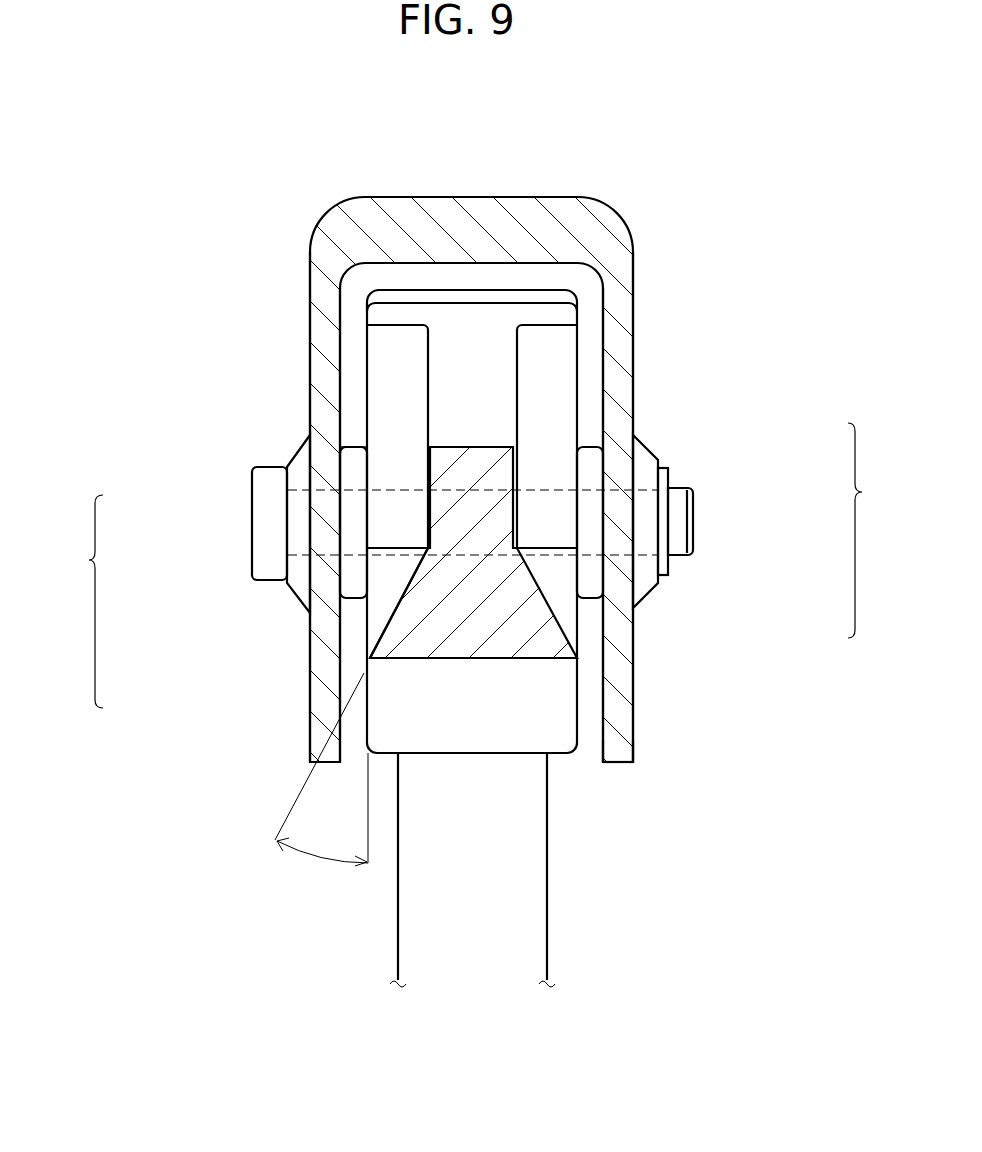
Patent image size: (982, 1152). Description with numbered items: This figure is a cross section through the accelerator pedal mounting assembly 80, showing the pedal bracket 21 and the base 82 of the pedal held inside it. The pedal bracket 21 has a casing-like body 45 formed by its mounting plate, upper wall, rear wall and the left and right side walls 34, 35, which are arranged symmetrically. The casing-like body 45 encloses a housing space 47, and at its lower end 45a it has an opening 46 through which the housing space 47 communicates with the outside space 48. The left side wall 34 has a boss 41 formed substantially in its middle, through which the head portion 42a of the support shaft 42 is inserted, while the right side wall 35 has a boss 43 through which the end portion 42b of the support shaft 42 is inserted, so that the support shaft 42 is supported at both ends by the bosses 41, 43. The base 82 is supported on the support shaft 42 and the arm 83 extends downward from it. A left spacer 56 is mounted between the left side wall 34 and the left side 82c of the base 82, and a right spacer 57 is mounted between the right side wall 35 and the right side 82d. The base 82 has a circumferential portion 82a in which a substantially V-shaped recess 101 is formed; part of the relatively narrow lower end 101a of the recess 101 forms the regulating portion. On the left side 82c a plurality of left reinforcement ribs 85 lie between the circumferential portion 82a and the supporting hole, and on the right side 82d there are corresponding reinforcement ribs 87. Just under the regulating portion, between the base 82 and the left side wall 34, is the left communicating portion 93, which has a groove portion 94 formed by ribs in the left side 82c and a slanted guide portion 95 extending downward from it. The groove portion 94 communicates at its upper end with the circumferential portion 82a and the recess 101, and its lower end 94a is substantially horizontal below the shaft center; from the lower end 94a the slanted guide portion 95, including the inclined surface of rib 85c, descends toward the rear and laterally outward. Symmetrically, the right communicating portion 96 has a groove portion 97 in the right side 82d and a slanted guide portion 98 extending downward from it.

The mounting structure 80 is at (491, 441).
The pedal bracket 21 is at (491, 454).
The casing-like body 45 is at (557, 197).
The housing space 47 is at (405, 275).
The left side wall 34 is at (308, 318).
The right side wall 35 is at (630, 388).
The opening 46 is at (600, 742).
The lower end 45a is at (636, 742).
The base 82 is at (385, 445).
The circumferential portion 82a is at (457, 297).
The left side 82c is at (427, 410).
The right side 82d is at (530, 393).
The lower end of groove portion 94a is at (398, 547).
The left reinforcement rib 85c is at (375, 622).
The substantially V-shaped recess 101 is at (472, 493).
The lower end of V-shaped recess 101a is at (490, 442).
The left spacer 56 is at (350, 480).
The right spacer 57 is at (595, 474).
The support shaft 42 is at (470, 523).
The head portion 42a is at (269, 523).
The end portion 42b is at (680, 508).
The boss 41 is at (297, 587).
The boss 43 is at (650, 538).
The arm 83 is at (548, 865).
The left reinforcement ribs 85 is at (368, 397).
The reinforcement ribs 87 is at (580, 368).
The groove portion 97 is at (550, 440).
The slanted guide portion 98 is at (560, 583).
The groove portion 94 is at (395, 458).
The slanted guide portion 95 is at (390, 600).
The left communicating portion 93 is at (83, 601).
The right communicating portion 96 is at (872, 530).
The outside space 48 is at (709, 937).